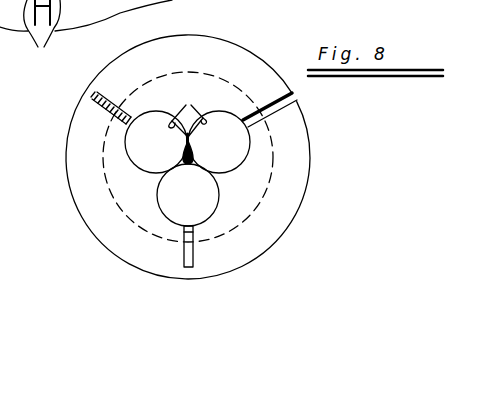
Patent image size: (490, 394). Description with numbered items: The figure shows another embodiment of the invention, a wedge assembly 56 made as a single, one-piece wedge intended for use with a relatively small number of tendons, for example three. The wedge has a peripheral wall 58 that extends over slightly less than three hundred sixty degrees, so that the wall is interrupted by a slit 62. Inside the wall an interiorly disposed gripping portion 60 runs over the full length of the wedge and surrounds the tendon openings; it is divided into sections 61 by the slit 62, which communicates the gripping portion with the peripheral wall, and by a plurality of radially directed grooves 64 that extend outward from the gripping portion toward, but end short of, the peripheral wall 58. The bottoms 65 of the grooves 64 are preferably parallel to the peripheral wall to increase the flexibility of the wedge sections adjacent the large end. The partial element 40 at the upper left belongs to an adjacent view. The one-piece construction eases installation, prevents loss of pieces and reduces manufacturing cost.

The fragment of adjacent figure element 40 is at (86, 36).
The wedge assembly 56 is at (304, 230).
The peripheral wall 58 is at (249, 50).
The gripping portion 60 is at (188, 111).
The sections 61 is at (172, 97).
The slit 62 is at (297, 98).
The grooves 64 is at (97, 101).
The bottoms of grooves 65 is at (92, 100).